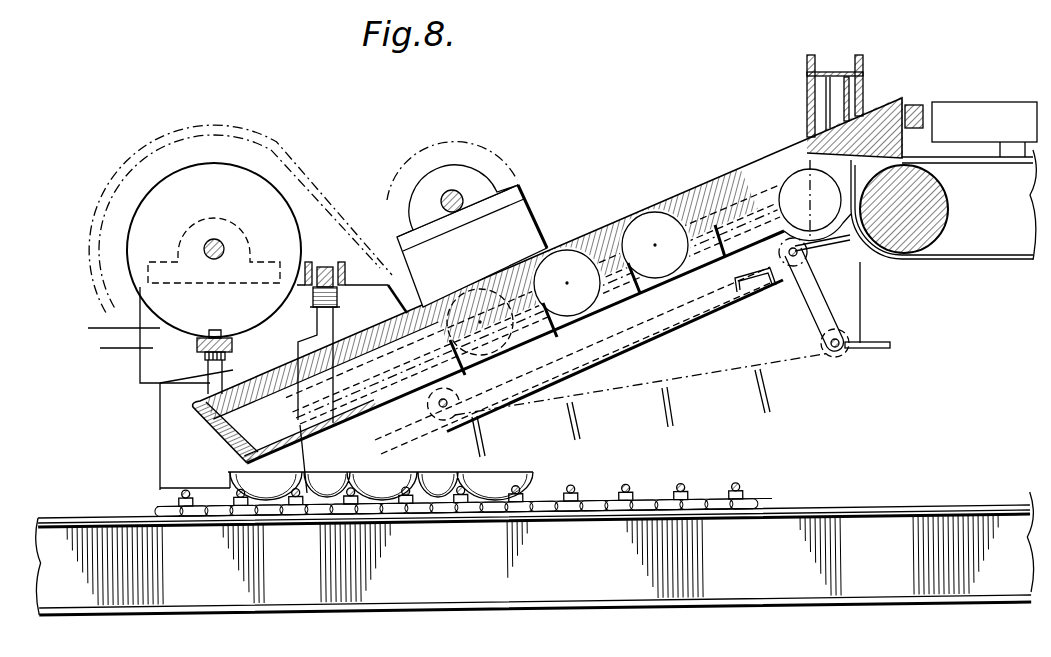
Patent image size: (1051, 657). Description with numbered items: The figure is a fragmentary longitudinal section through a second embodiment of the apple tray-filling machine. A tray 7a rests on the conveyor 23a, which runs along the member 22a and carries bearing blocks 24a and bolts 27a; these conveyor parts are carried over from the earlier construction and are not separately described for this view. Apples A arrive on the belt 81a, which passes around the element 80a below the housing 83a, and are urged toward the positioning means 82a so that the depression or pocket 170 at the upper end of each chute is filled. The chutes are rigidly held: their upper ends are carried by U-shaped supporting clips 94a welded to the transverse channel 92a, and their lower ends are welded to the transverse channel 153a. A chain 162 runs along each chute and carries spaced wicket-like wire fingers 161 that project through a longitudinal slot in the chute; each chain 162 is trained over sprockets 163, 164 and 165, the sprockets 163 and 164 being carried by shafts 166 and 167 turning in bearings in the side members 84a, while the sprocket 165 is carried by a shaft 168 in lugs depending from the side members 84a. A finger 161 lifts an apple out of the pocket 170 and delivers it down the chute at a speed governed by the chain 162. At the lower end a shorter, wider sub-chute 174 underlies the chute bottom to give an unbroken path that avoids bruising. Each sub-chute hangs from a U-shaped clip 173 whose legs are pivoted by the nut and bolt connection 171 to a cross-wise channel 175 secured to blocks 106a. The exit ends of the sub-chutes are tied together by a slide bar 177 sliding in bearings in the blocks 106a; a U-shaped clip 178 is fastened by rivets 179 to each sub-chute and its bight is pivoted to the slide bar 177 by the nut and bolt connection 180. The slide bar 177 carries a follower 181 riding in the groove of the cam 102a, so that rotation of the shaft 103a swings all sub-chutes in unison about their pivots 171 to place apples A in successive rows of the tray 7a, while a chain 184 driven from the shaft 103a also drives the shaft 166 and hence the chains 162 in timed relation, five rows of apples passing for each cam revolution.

The tray 7a is at (490, 475).
The rail beam 22a is at (853, 538).
The conveyor 23a is at (757, 502).
The chain bearing blocks 24a is at (702, 500).
The bolts 27a is at (681, 491).
The roller 80a is at (915, 209).
The belt 81a is at (1003, 262).
The positioning means 82a is at (646, 189).
The support box 83a is at (992, 102).
The side members 84a is at (605, 345).
The transverse channel 92a is at (864, 58).
The U-shaped supporting clips 94a is at (850, 87).
The cam 102a is at (140, 224).
The shaft 103a is at (214, 239).
The blocks 106a is at (126, 388).
The transverse channel 153a is at (303, 437).
The wicket-like wire fingers 161 is at (449, 348).
The chain 162 is at (790, 363).
The sprocket 163 is at (504, 383).
The sprocket 164 is at (762, 292).
The sprocket 165 is at (820, 343).
The shaft 166 is at (440, 404).
The shaft 167 is at (790, 248).
The shaft 168 is at (835, 350).
The depression 170 is at (808, 226).
The nut and bolt connection 171 is at (325, 266).
The U-shaped clip 173 is at (317, 340).
The sub-chute 174 is at (547, 338).
The channel 175 is at (343, 262).
The slide bar 177 is at (112, 349).
The U-shaped clip 178 is at (160, 390).
The rivets 179 is at (240, 392).
The nut and bolt connection 180 is at (140, 383).
The follower 181 is at (213, 336).
The chain 184 is at (147, 163).
The apples A is at (632, 217).